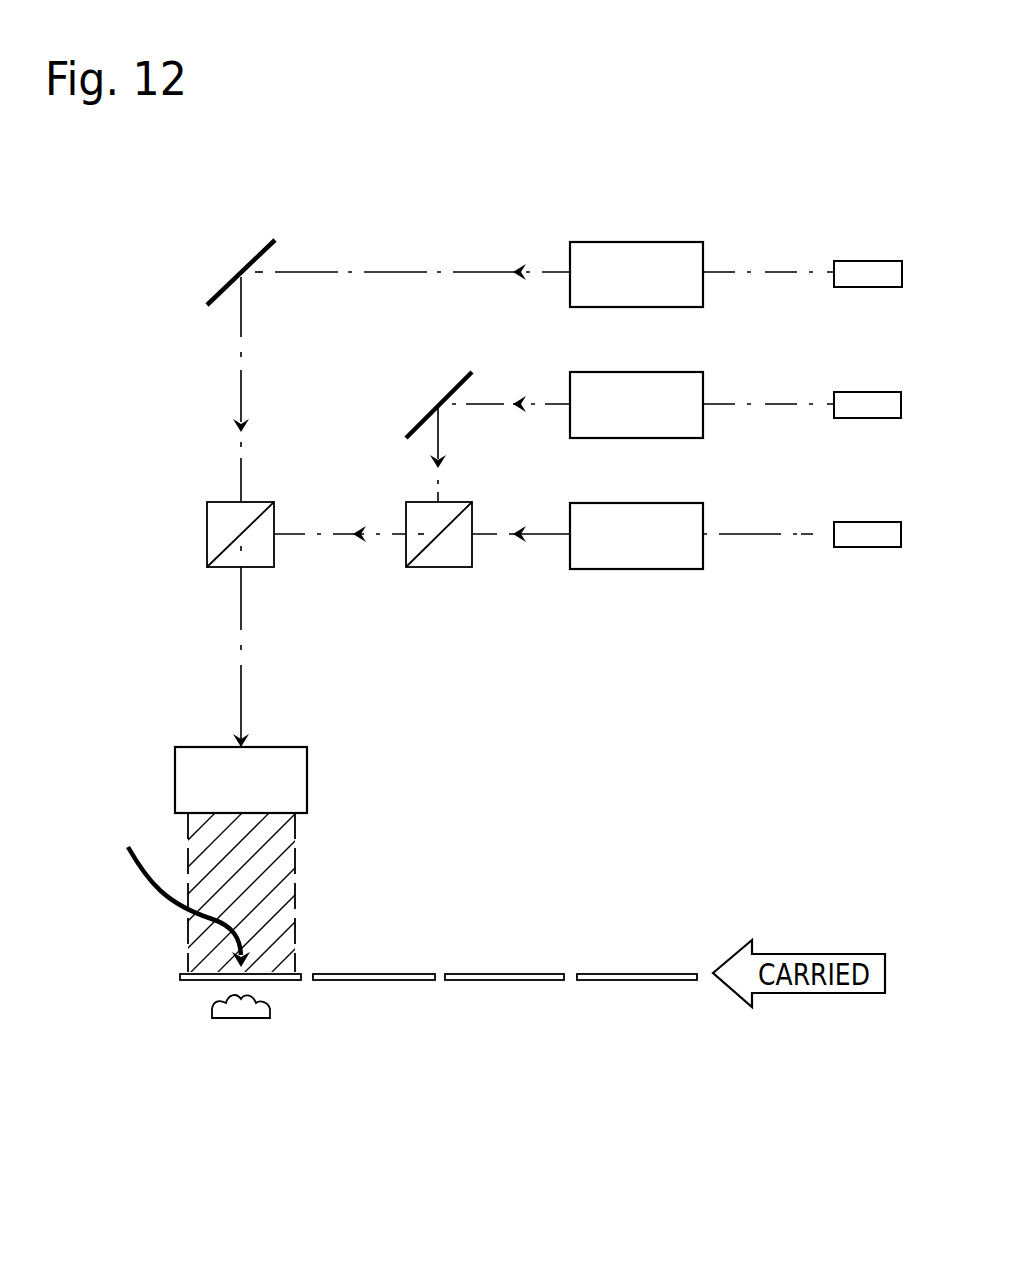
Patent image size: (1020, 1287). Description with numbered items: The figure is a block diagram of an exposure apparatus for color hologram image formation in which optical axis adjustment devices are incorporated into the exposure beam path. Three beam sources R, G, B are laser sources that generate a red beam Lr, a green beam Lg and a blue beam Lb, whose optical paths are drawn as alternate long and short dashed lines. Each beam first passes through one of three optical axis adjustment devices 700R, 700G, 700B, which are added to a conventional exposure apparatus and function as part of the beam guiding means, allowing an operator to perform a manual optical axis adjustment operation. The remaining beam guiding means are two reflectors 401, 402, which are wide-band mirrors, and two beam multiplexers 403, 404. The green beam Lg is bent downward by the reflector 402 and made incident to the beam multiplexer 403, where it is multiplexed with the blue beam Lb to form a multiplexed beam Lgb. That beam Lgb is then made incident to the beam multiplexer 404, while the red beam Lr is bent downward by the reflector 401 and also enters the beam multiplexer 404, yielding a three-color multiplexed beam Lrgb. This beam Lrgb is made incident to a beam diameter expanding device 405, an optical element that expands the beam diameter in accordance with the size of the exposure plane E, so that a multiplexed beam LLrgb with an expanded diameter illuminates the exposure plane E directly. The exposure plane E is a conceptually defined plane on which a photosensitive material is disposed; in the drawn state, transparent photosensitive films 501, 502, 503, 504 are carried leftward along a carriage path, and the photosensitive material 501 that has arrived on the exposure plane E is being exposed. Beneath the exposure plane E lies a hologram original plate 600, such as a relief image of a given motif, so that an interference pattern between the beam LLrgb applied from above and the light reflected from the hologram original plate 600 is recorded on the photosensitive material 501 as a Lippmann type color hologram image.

The reflector 401 is at (233, 283).
The reflector 402 is at (430, 419).
The beam multiplexer 403 is at (450, 567).
The beam multiplexer 404 is at (207, 536).
The beam diameter expanding device 405 is at (307, 775).
The photosensitive material 501 is at (188, 982).
The photosensitive material 502 is at (372, 981).
The photosensitive material 503 is at (512, 981).
The photosensitive material 504 is at (647, 981).
The hologram original plate 600 is at (237, 1009).
The optical axis adjustment device 700R is at (636, 256).
The optical axis adjustment device 700G is at (636, 387).
The optical axis adjustment device 700B is at (636, 518).
The beam source R is at (878, 261).
The beam source G is at (878, 392).
The beam source B is at (878, 522).
The red beam Lr is at (766, 248).
The green beam Lg is at (768, 384).
The blue beam Lb is at (768, 513).
The multiplexed beam Lgb is at (327, 512).
The three-color multiplexed beam Lrgb is at (285, 652).
The multiplexed beam having an expanded beam diameter LLrgb is at (295, 868).
The exposure plane E is at (183, 888).